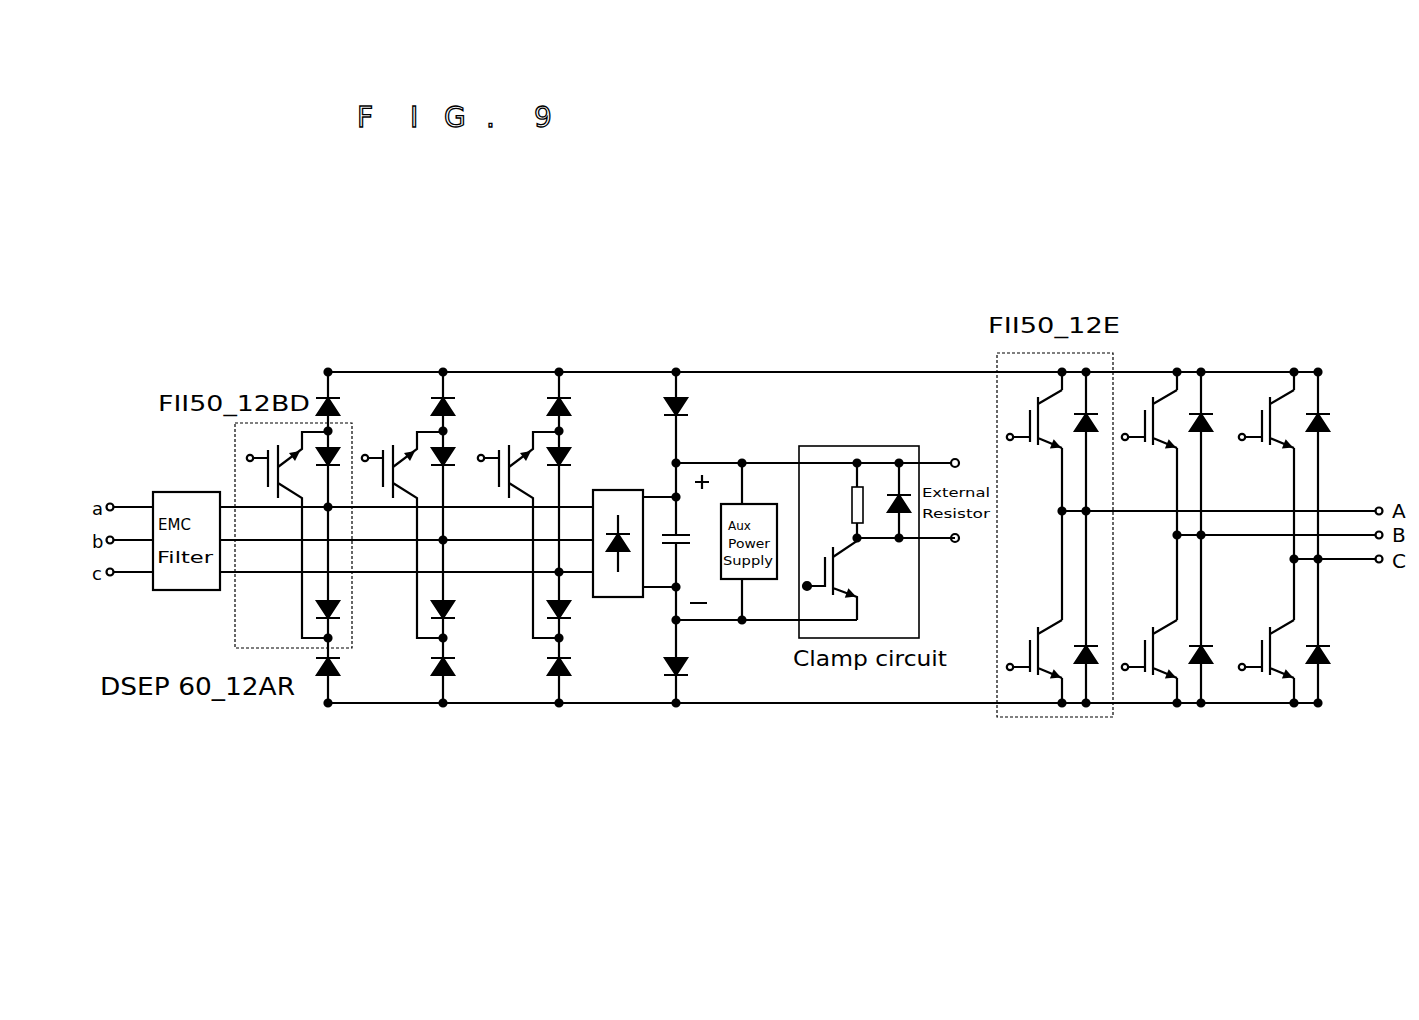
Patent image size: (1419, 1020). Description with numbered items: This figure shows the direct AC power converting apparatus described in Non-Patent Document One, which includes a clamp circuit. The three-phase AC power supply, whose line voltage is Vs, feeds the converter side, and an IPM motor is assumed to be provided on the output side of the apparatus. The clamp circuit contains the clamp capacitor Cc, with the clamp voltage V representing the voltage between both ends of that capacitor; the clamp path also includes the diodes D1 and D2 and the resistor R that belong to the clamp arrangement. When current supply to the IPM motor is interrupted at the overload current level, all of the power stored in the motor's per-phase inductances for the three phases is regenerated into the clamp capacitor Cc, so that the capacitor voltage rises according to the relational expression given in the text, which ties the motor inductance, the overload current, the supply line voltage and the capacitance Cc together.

The upper DC bus diode D1 is at (694, 410).
The lower DC bus diode D2 is at (694, 670).
The clamp capacitor Cc is at (670, 552).
The clamp resistor R is at (849, 500).
The DC link voltage V is at (696, 539).